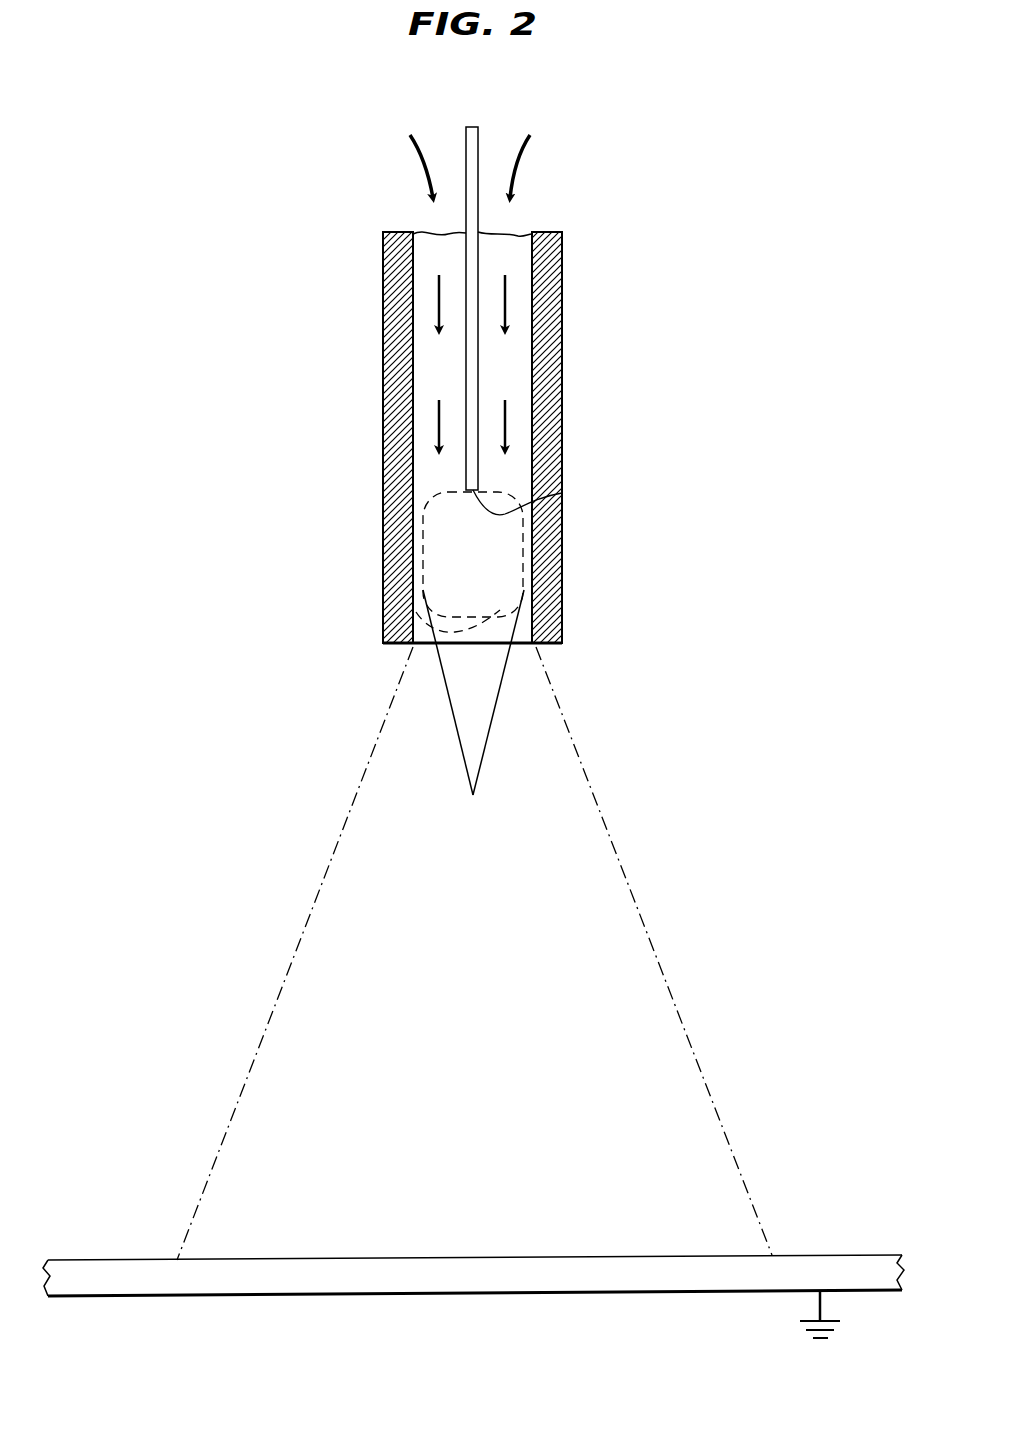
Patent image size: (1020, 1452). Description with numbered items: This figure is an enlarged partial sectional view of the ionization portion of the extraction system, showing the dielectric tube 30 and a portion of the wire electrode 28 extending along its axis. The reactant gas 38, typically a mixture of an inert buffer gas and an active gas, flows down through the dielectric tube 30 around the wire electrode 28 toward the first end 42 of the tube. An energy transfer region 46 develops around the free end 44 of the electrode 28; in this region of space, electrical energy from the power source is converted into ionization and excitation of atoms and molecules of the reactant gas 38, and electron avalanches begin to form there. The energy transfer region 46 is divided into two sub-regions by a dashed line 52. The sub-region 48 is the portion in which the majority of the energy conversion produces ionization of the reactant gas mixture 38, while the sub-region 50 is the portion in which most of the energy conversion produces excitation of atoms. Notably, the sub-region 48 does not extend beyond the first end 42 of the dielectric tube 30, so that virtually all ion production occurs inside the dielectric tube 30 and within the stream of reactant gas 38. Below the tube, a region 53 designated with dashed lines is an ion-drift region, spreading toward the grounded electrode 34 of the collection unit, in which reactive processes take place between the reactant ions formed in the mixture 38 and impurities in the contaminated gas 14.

The contaminated gas 14 is at (665, 832).
The wire electrode 28 is at (466, 165).
The dielectric tube 30 is at (382, 322).
The grounded electrode 34 is at (840, 1257).
The reactant gas 38 is at (513, 170).
The first end of the dielectric tube 42 is at (533, 643).
The free end of the electrode 44 is at (562, 493).
The energy transfer region 46 is at (447, 703).
The ionization sub-region 48 is at (423, 541).
The excitation sub-region 50 is at (498, 703).
The dashed line 52 is at (410, 616).
The ion-drift region 53 is at (643, 918).